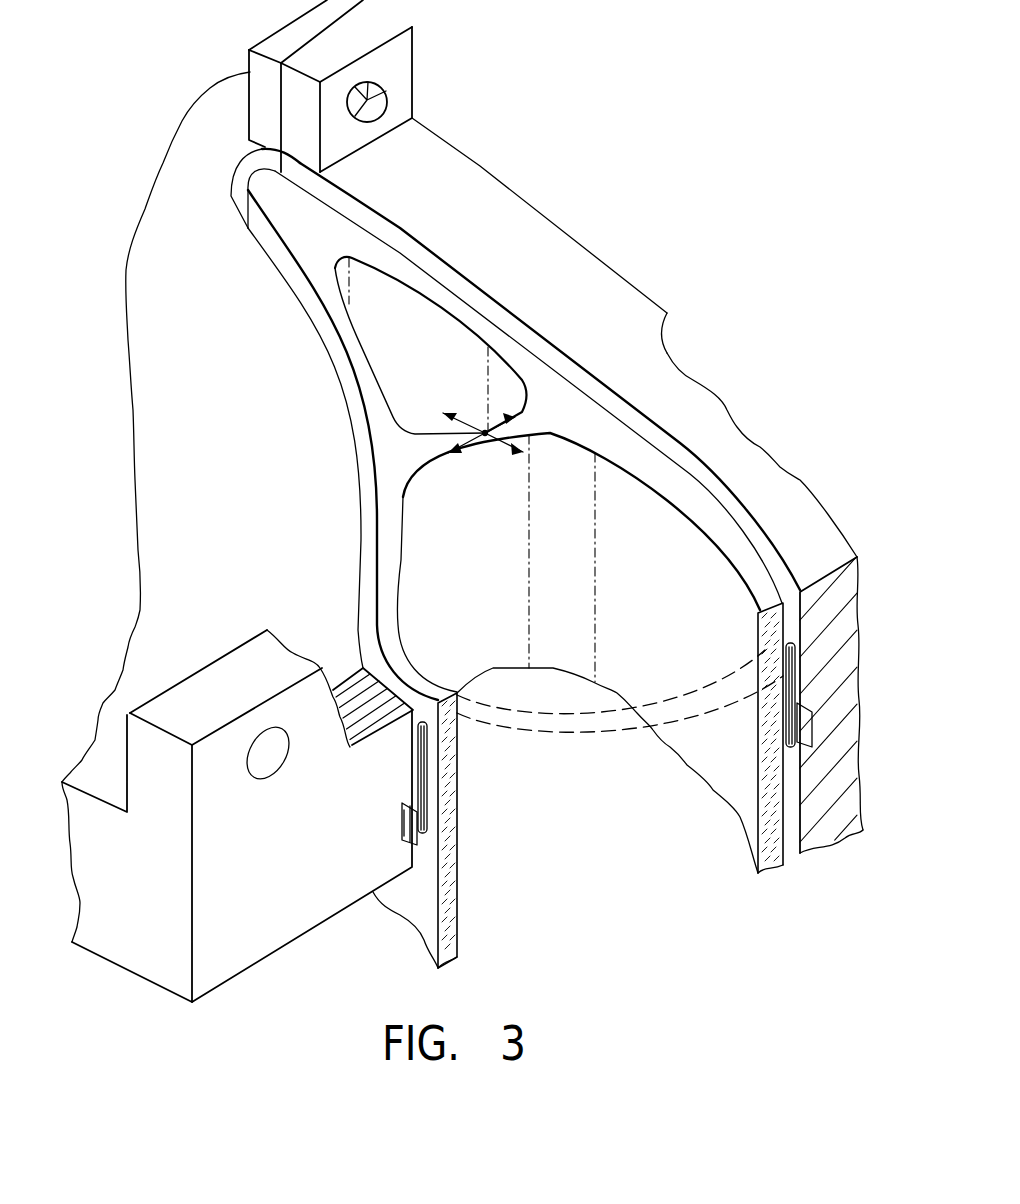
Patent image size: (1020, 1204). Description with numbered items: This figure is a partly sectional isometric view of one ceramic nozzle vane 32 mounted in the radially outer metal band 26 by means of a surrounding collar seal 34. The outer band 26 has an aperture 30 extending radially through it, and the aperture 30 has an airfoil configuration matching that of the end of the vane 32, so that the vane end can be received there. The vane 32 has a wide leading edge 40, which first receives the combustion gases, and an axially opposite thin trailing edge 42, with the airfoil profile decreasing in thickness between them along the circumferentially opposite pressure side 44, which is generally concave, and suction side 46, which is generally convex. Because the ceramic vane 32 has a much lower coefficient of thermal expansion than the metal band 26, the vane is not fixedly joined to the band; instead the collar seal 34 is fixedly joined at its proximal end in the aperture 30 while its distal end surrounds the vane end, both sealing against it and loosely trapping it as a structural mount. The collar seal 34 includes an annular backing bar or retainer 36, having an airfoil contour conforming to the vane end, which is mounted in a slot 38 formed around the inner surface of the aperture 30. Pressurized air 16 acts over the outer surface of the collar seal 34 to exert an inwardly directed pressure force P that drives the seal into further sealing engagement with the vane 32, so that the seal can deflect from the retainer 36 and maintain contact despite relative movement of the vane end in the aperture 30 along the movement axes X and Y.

The pressurized air 16 is at (488, 474).
The outer band 26 is at (198, 487).
The aperture 30 is at (296, 307).
The nozzle vane 32 is at (458, 893).
The collar seal 34 is at (427, 782).
The retainer 36 is at (405, 807).
The slot 38 is at (400, 830).
The leading edge 40 is at (577, 732).
The trailing edge 42 is at (250, 176).
The pressure side 44 is at (362, 392).
The suction side 46 is at (438, 280).
The pressure force P is at (413, 752).
The movement axis X is at (477, 443).
The movement axis Y is at (495, 443).